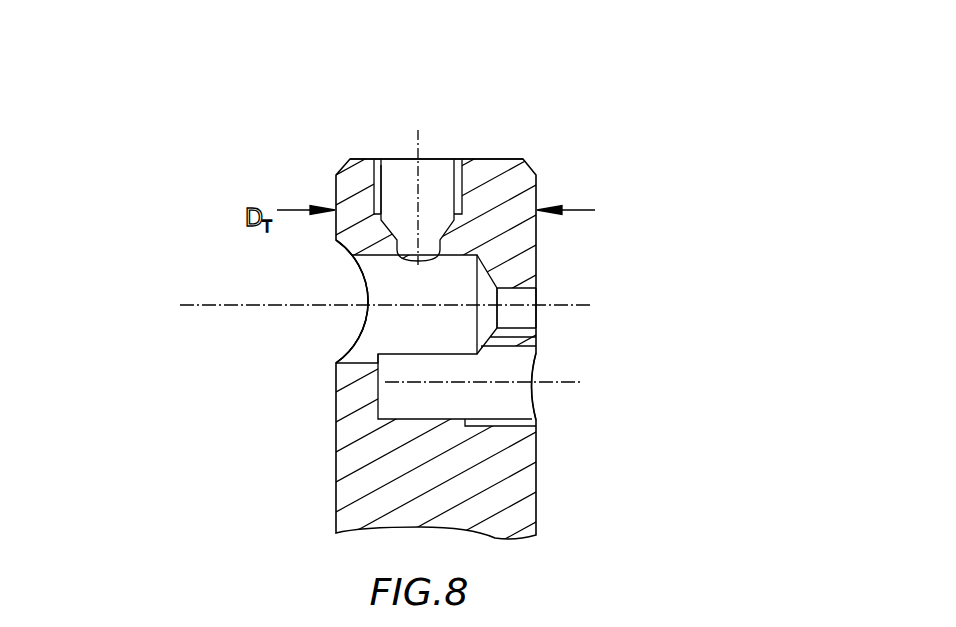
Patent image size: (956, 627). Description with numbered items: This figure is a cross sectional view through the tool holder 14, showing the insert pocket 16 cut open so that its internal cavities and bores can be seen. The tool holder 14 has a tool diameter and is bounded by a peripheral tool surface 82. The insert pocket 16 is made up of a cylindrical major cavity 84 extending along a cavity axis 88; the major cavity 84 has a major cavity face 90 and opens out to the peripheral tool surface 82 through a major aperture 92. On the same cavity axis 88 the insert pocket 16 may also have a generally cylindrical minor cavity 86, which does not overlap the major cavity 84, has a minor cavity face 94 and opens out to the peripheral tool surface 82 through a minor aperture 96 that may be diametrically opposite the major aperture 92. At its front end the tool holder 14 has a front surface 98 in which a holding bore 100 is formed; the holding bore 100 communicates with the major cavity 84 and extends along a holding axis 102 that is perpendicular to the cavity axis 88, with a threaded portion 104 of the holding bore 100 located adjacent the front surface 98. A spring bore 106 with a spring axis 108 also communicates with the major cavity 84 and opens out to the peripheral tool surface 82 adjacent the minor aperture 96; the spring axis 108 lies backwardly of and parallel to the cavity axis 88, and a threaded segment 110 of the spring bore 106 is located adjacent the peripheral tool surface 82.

The tool holder 14 is at (190, 56).
The insert pocket 16 is at (312, 328).
The peripheral tool surface 82 is at (337, 463).
The major cavity 84 is at (360, 330).
The minor cavity 86 is at (540, 292).
The cavity axis 88 is at (307, 305).
The major cavity face 90 is at (392, 278).
The major aperture 92 is at (365, 273).
The minor cavity face 94 is at (522, 318).
The minor aperture 96 is at (537, 317).
The front surface 98 is at (503, 158).
The holding bore 100 is at (442, 129).
The holding axis 102 is at (417, 146).
The threaded portion 104 is at (388, 165).
The spring bore 106 is at (555, 398).
The spring axis 108 is at (583, 382).
The threaded segment 110 is at (497, 418).